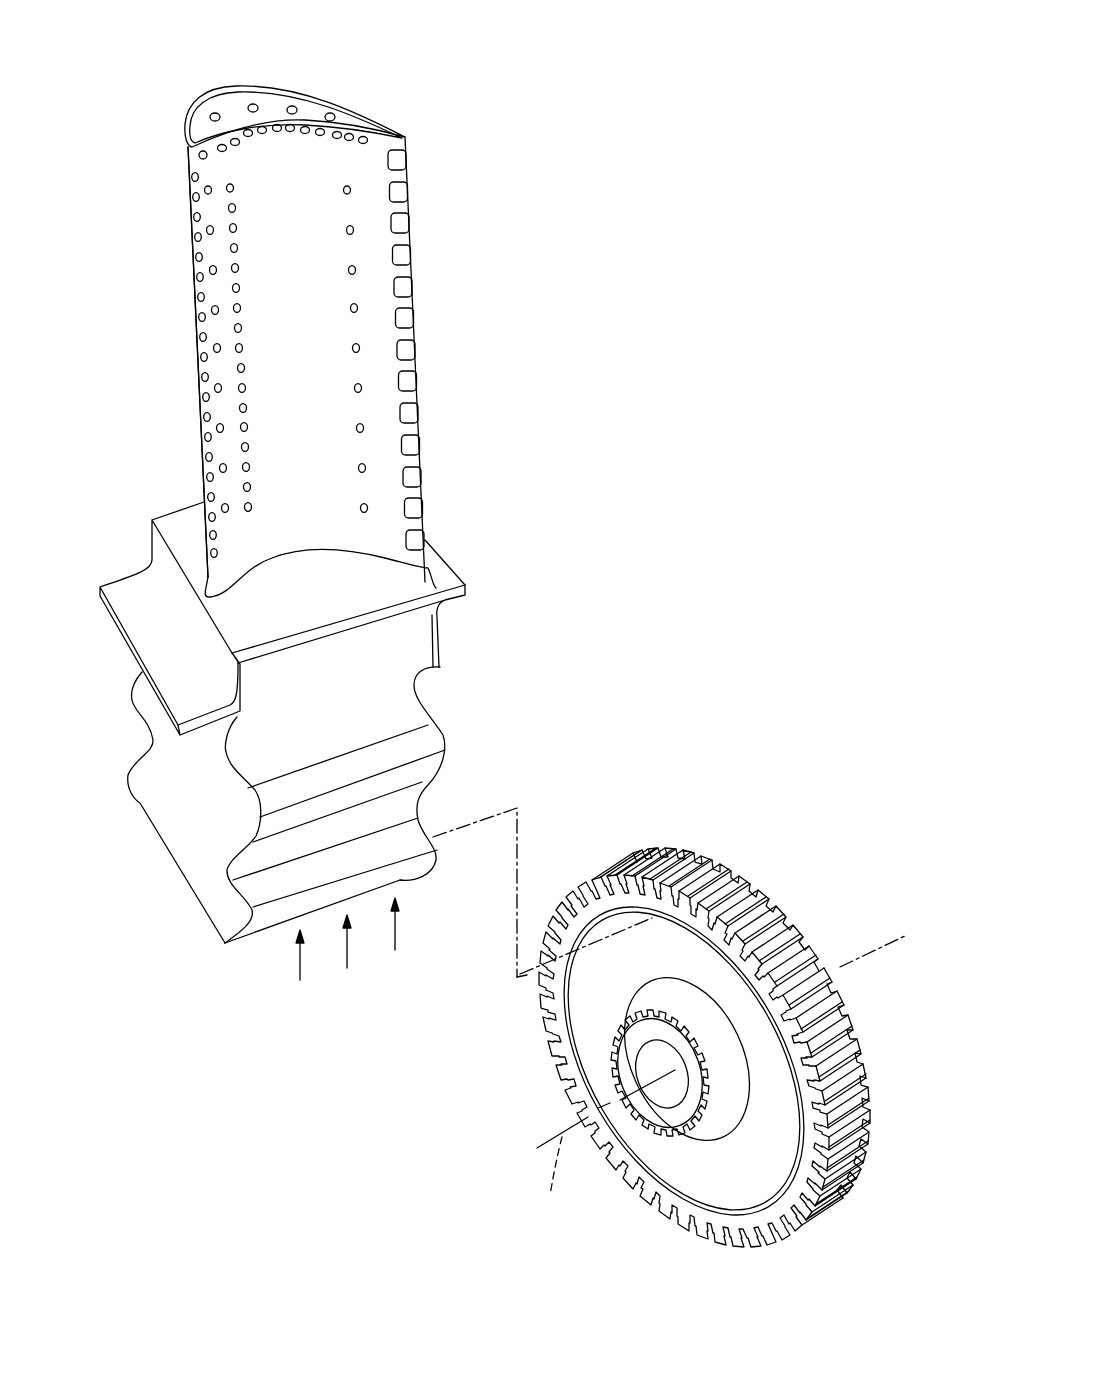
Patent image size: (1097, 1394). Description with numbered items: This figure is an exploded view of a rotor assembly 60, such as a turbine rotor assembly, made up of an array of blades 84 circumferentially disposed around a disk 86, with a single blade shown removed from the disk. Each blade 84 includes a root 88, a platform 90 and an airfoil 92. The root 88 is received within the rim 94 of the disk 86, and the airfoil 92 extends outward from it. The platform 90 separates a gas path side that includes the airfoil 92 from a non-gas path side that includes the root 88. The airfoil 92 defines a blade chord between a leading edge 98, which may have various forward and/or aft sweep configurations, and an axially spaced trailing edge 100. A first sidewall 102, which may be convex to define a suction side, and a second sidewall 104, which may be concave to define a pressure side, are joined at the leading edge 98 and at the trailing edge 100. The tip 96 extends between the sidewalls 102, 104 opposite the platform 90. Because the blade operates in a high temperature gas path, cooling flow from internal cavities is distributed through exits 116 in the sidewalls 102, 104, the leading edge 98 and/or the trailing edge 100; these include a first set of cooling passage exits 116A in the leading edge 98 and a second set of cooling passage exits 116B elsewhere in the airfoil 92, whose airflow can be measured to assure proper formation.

The blade 84 is at (497, 663).
The airfoil 92 is at (334, 333).
The second sidewall 104 is at (224, 88).
The tip 96 is at (240, 104).
The exits 116 is at (347, 190).
The first set of cooling passage exits 116A is at (194, 217).
The second set of cooling passage exits 116B is at (235, 350).
The leading edge 98 is at (198, 311).
The trailing edge 100 is at (421, 293).
The first sidewall 102 is at (313, 223).
The platform 90 is at (183, 519).
The root 88 is at (376, 812).
The rotor assembly 60 is at (721, 999).
The disk 86 is at (802, 908).
The rim 94 is at (838, 992).